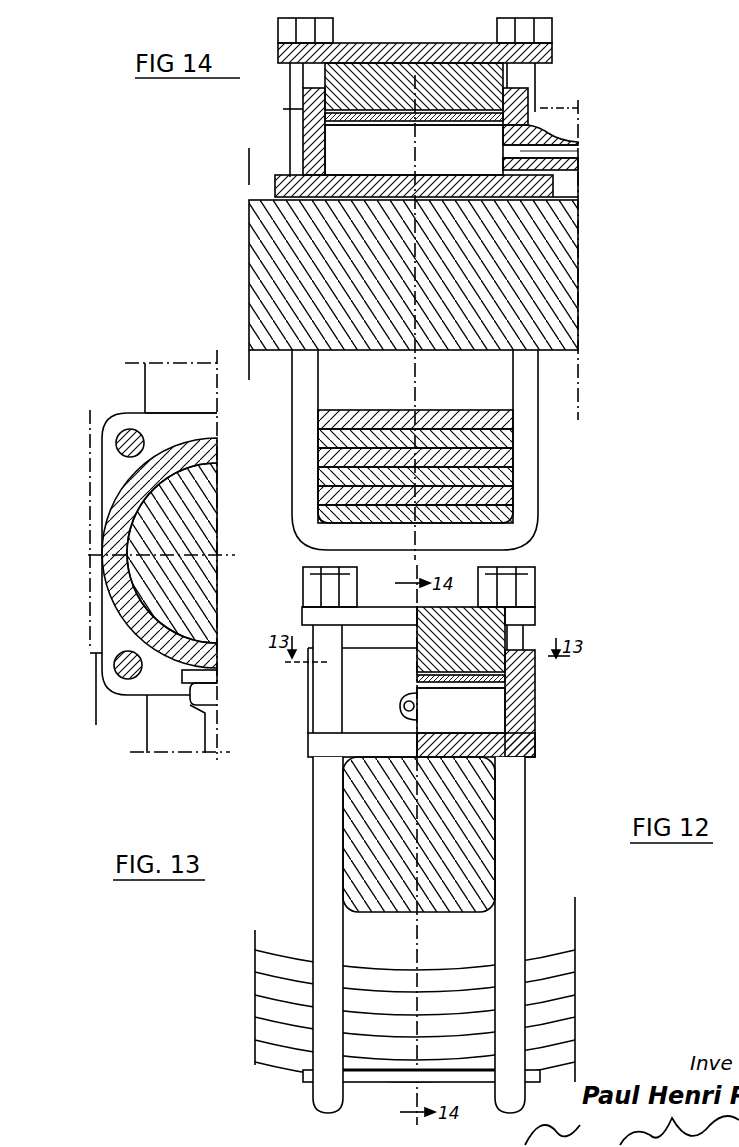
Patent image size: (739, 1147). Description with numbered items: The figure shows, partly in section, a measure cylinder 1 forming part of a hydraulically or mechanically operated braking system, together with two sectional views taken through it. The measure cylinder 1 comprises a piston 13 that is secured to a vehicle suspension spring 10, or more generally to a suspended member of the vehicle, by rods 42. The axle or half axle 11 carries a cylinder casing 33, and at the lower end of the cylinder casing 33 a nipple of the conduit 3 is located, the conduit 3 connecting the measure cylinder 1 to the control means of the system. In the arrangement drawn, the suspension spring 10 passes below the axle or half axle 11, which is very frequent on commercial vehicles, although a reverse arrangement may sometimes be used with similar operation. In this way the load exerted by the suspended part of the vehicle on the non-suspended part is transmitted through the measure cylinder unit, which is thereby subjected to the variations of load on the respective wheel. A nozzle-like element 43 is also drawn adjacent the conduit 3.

In FIG. 14, the housing body 1 is at (308, 150).
In FIG. 12, the housing body 1 is at (308, 680).
In FIG. 13, the housing body 1 is at (215, 450).
In FIG. 14, the tube 3 is at (578, 151).
In FIG. 13, the tube 3 is at (210, 732).
In FIG. 14, the laminated spring stack 10 is at (497, 417).
In FIG. 12, the laminated spring stack 10 is at (560, 963).
In FIG. 13, the laminated spring stack 10 is at (97, 706).
In FIG. 14, the block 11 is at (562, 233).
In FIG. 12, the block 11 is at (470, 868).
In FIG. 13, the block 11 is at (170, 727).
In FIG. 14, the cover plate 13 is at (537, 53).
In FIG. 12, the cover plate 13 is at (488, 640).
In FIG. 13, the cover plate 13 is at (200, 585).
In FIG. 14, the diaphragm 33 is at (535, 122).
In FIG. 12, the diaphragm 33 is at (529, 666).
In FIG. 13, the diaphragm 33 is at (202, 658).
In FIG. 14, the bolt 42 is at (527, 373).
In FIG. 12, the bolt 42 is at (508, 803).
In FIG. 13, the bolt 42 is at (127, 435).
In FIG. 14, the nozzle 43 is at (578, 142).
In FIG. 13, the nozzle 43 is at (210, 694).